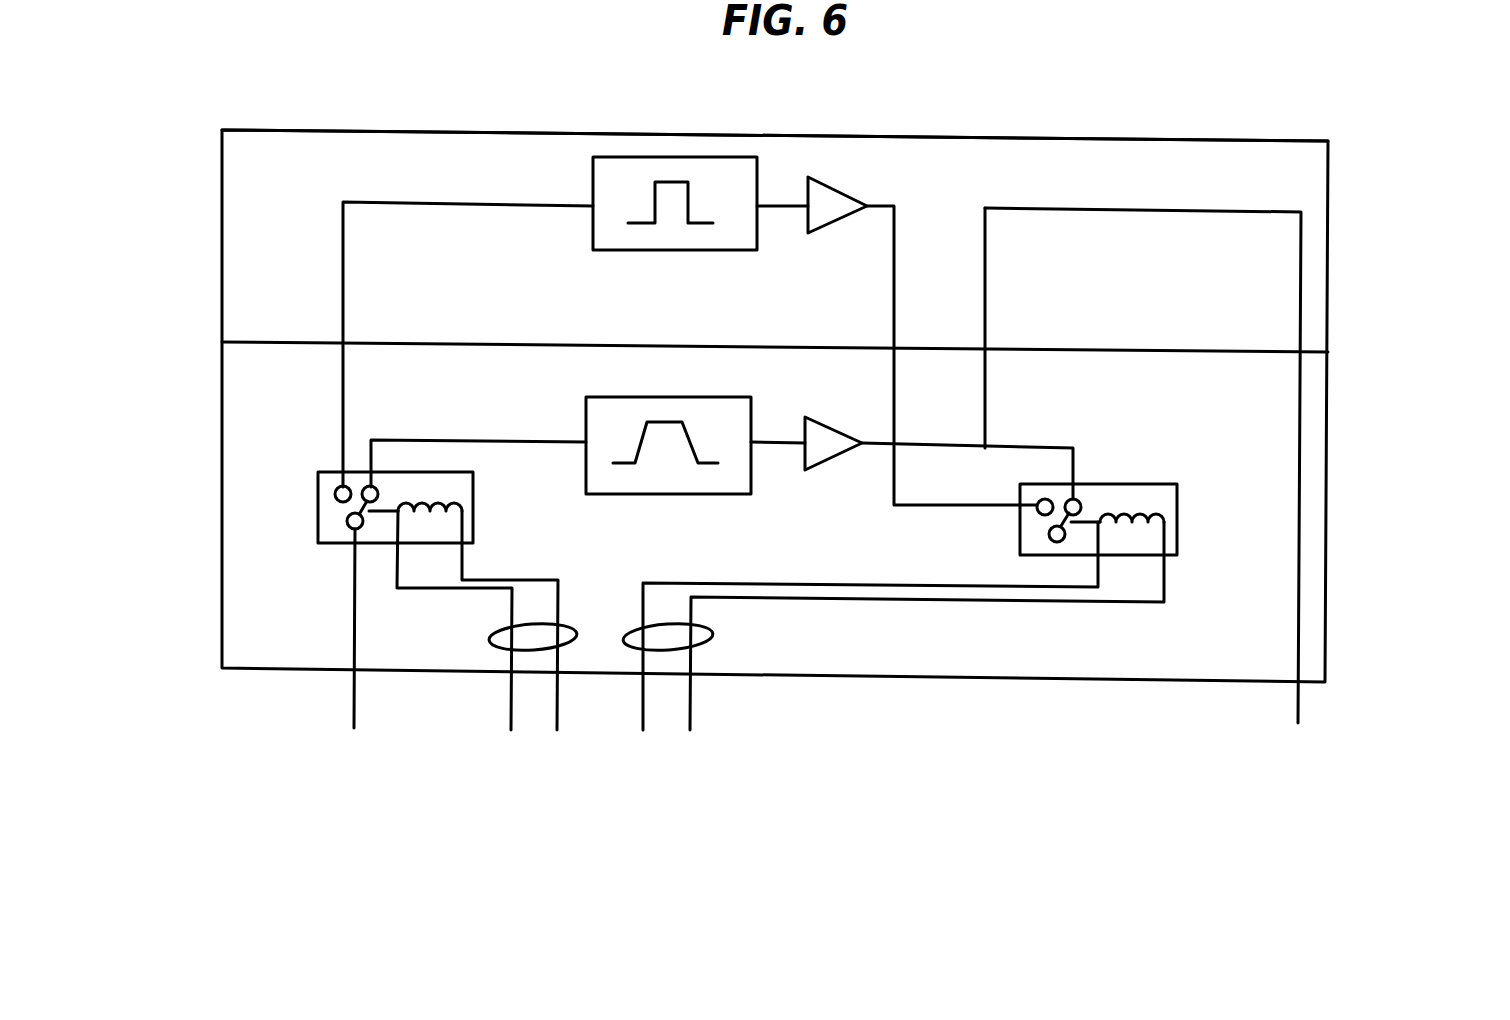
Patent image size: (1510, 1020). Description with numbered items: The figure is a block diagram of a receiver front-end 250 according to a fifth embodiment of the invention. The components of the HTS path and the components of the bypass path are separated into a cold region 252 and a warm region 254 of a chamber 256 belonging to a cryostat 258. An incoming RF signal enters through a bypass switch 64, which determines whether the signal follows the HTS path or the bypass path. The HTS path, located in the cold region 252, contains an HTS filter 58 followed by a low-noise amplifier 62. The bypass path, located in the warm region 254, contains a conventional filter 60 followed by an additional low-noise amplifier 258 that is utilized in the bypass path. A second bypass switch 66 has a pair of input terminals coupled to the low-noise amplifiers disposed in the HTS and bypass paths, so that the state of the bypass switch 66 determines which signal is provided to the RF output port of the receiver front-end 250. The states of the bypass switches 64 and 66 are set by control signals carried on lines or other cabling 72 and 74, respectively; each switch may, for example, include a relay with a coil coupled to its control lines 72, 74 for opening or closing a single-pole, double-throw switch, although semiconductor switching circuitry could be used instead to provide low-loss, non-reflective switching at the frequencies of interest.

The receiver front-end 250 is at (1392, 325).
The cold region 252 is at (248, 243).
The warm region 254 is at (246, 402).
The chamber 256 is at (1245, 164).
The cryostat 258 is at (470, 130).
The HTS filter 58 is at (675, 157).
The conventional filter 60 is at (751, 415).
The low-noise amplifier 62 is at (838, 190).
The bypass switch 64 is at (318, 495).
The bypass switch 66 is at (1177, 499).
The control signal lines 72 is at (492, 640).
The control signal lines 74 is at (708, 640).